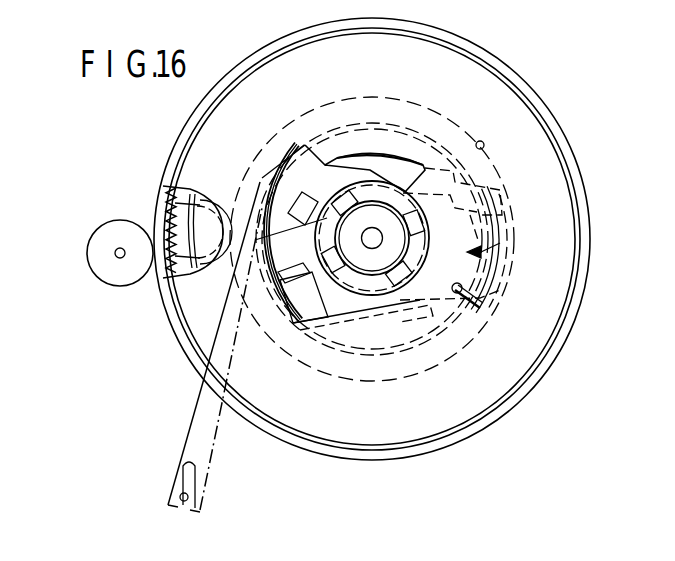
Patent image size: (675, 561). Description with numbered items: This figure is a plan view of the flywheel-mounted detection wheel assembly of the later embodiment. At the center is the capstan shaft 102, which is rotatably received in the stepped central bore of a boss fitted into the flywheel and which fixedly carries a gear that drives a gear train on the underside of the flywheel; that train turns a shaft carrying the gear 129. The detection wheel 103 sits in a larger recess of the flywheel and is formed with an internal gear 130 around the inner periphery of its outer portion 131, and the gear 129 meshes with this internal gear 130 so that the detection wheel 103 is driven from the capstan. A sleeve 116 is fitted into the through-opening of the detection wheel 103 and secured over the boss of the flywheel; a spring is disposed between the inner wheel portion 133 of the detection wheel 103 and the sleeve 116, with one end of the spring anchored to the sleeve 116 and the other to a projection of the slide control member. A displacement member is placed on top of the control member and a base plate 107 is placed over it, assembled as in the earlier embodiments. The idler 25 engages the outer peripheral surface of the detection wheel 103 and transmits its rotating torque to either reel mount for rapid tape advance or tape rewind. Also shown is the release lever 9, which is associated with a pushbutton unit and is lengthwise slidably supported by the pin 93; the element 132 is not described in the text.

The release lever 9 is at (195, 436).
The idler 25 is at (88, 258).
The pin 93 is at (190, 498).
The capstan shaft 102 is at (381, 241).
The detection wheel 103 is at (531, 60).
The base plate 107 is at (532, 122).
The sleeve 116 is at (420, 218).
The gear 129 is at (157, 221).
The internal gear 130 is at (163, 190).
The outer portion 131 is at (575, 168).
The locating hole 132 is at (484, 147).
The inner wheel portion 133 is at (419, 130).